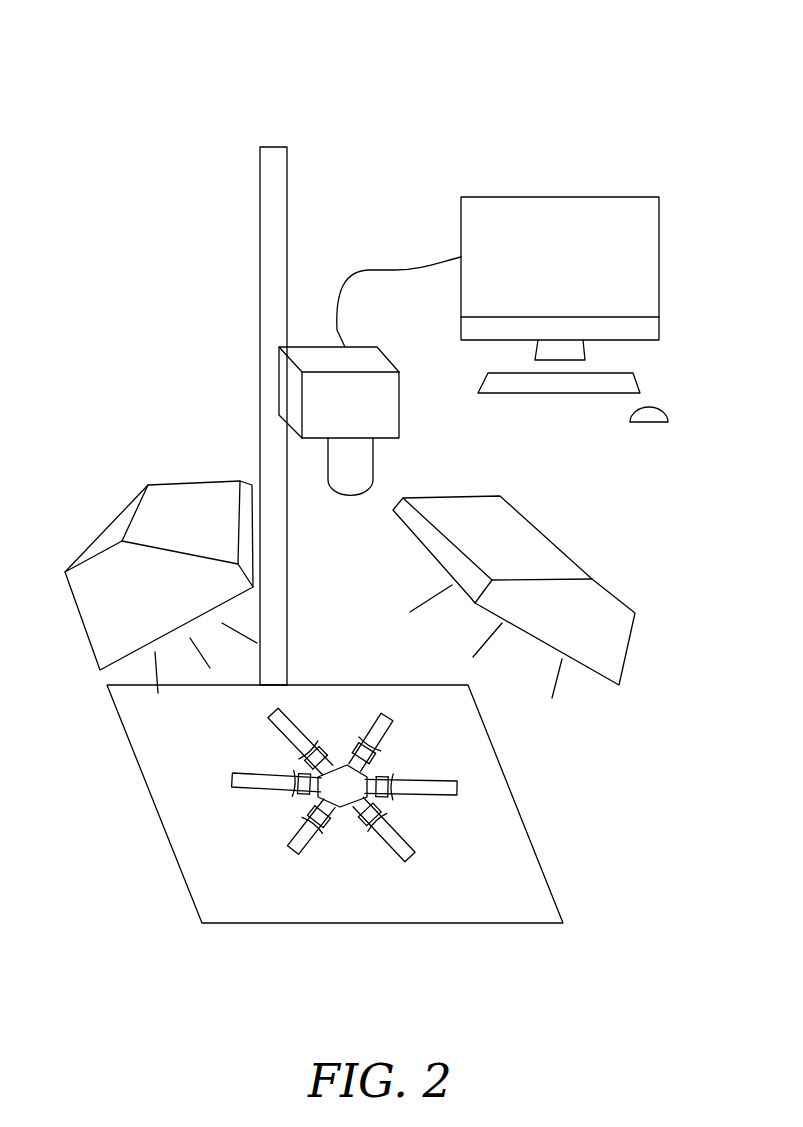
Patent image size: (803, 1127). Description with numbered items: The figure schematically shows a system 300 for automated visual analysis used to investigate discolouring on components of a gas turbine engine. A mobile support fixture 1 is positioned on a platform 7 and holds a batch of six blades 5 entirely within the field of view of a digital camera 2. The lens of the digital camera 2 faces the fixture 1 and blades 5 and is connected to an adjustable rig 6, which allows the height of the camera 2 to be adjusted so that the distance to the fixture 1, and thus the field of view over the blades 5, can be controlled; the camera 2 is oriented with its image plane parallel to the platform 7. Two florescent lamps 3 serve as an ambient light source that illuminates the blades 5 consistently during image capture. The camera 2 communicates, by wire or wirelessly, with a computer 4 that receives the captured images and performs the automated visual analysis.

The system 300 is at (190, 78).
The adjustable rig 6 is at (287, 190).
The computer 4 is at (565, 213).
The digital camera 2 is at (385, 405).
The florescent lamps 3 is at (110, 518).
The blades 5 is at (380, 740).
The mobile support fixture 1 is at (384, 785).
The platform 7 is at (507, 835).